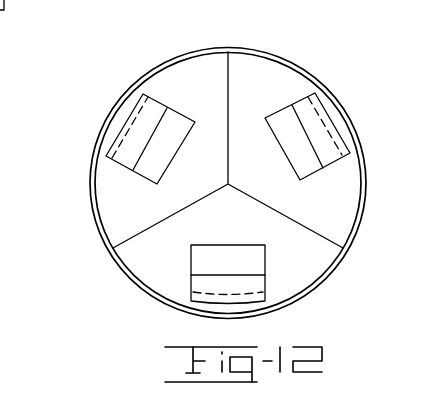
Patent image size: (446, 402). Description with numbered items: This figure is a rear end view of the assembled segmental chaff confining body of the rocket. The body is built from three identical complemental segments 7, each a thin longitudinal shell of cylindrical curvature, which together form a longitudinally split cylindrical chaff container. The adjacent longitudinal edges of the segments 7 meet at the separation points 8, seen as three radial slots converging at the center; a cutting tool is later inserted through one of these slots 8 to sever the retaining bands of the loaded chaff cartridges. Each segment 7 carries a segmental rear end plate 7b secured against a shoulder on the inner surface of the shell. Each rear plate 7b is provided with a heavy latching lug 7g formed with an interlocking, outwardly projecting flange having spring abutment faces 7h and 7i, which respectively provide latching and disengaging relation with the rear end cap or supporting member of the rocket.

The complemental segment 7 is at (122, 98).
The rear end plate 7b is at (184, 71).
The latching lug 7g is at (172, 160).
The spring abutment face 7h is at (112, 143).
The spring abutment face 7i is at (147, 173).
The separation point 8 is at (234, 43).